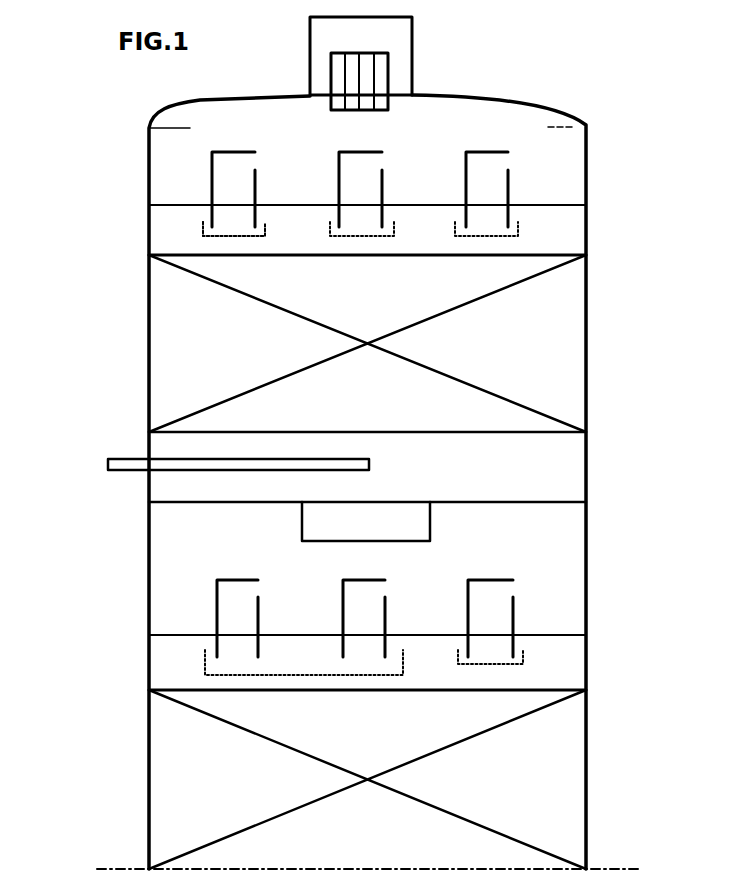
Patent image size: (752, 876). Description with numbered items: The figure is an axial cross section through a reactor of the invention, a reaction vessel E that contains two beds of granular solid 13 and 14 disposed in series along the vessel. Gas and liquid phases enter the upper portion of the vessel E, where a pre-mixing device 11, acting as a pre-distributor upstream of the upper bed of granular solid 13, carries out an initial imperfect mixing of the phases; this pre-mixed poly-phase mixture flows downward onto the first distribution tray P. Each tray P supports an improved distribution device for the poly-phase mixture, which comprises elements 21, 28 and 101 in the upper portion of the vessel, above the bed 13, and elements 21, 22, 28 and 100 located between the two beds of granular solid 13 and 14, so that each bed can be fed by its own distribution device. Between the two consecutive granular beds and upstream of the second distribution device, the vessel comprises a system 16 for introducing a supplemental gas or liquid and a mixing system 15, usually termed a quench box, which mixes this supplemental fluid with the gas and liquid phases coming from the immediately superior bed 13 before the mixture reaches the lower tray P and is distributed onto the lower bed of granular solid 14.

The reaction vessel E is at (116, 181).
The pre-mixing device 11 is at (380, 85).
The tray P is at (553, 203).
The bed of granular solid 13 is at (222, 333).
The system for introducing a supplemental gas or liquid 16 is at (127, 463).
The mixing system 15 is at (340, 511).
The distribution device element 21 is at (525, 150).
The distributor chimney 22 is at (498, 593).
The distribution device element 28 is at (524, 225).
The distribution device element 101 is at (198, 225).
The distribution device element 100 is at (203, 668).
The bed of granular solid 14 is at (236, 771).